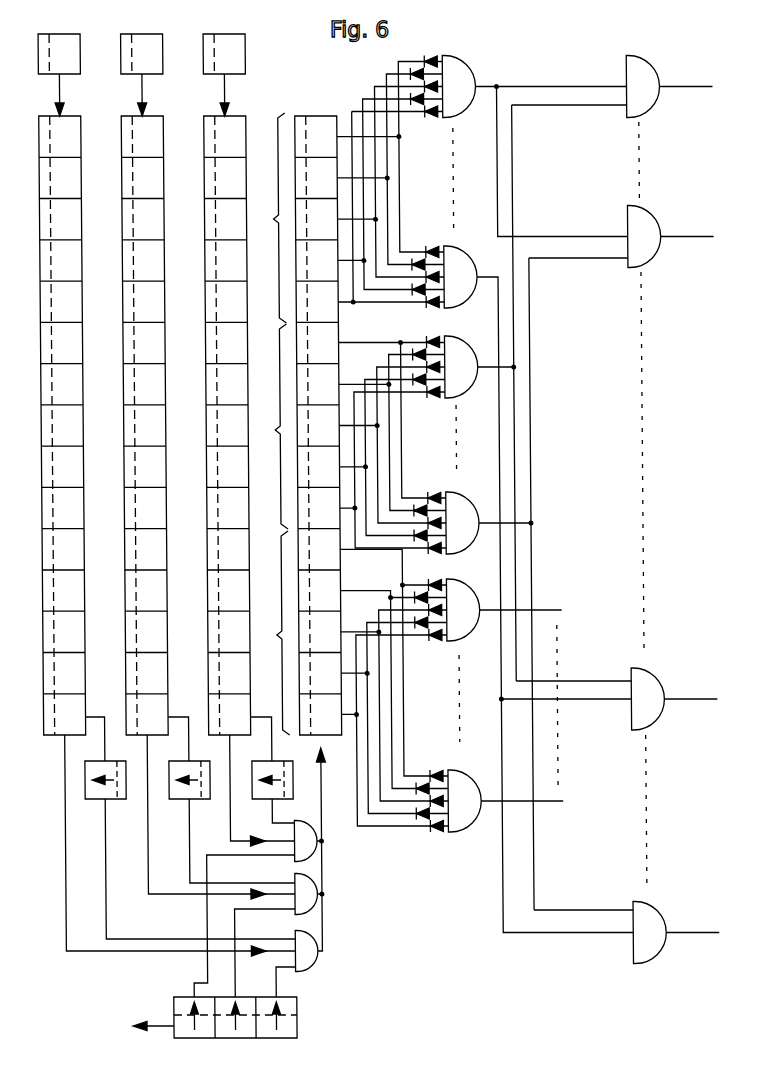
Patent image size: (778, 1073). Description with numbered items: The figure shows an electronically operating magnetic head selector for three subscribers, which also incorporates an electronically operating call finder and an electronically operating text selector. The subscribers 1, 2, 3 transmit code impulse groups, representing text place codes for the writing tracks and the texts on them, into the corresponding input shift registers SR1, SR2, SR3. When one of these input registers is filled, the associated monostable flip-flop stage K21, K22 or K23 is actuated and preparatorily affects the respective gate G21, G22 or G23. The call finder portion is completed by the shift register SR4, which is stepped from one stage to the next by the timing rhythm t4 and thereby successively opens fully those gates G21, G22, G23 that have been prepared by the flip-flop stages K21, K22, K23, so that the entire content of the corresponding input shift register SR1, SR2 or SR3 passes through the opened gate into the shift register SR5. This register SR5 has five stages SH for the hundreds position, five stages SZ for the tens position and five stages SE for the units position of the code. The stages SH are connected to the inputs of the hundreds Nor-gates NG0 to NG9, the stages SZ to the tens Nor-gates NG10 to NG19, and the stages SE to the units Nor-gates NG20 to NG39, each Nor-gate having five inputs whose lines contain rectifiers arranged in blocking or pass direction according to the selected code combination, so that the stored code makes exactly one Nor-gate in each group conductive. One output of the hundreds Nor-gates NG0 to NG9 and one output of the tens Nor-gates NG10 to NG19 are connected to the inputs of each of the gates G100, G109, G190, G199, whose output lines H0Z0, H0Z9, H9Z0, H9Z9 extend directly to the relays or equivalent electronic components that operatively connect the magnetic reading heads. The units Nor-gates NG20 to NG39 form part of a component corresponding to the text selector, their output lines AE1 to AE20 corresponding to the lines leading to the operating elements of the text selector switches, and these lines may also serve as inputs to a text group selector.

The subscriber 1 is at (59, 65).
The subscriber 2 is at (141, 65).
The subscriber 3 is at (224, 65).
The input shift register SR1 is at (79, 425).
The input shift register SR2 is at (161, 425).
The input shift register SR3 is at (243, 425).
The shift register SR4 is at (256, 1017).
The shift register SR5 is at (318, 414).
The shift stages for the hundreds position SH is at (268, 218).
The shift stages for the tens position SZ is at (269, 426).
The shift stages for the units position SE is at (272, 633).
The Nor-gate NG0 is at (446, 75).
The Nor-gate NG9 is at (447, 266).
The Nor-gate NG10 is at (451, 356).
The Nor-gate NG19 is at (453, 513).
The Nor-gate NG20 is at (454, 600).
The Nor-gate NG39 is at (456, 790).
The gate G100 is at (636, 75).
The gate G109 is at (636, 225).
The gate G190 is at (642, 689).
The gate G199 is at (645, 923).
The output line H0Z0 is at (686, 77).
The output line H0Z9 is at (687, 226).
The output line H9Z0 is at (690, 688).
The output line H9Z9 is at (692, 924).
The output line AE1 is at (541, 615).
The output line AE20 is at (547, 803).
The monostable flip-flop stage K21 is at (98, 791).
The monostable flip-flop stage K22 is at (181, 791).
The monostable flip-flop stage K23 is at (265, 791).
The gate G21 is at (308, 831).
The gate G22 is at (289, 888).
The gate G23 is at (289, 944).
The timing rhythm t4 is at (141, 1027).